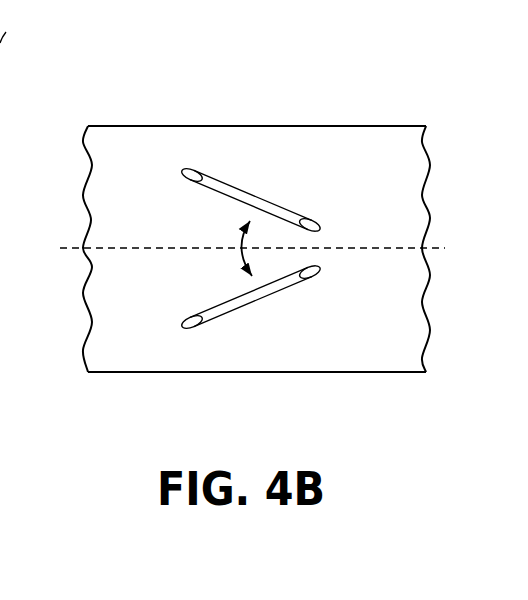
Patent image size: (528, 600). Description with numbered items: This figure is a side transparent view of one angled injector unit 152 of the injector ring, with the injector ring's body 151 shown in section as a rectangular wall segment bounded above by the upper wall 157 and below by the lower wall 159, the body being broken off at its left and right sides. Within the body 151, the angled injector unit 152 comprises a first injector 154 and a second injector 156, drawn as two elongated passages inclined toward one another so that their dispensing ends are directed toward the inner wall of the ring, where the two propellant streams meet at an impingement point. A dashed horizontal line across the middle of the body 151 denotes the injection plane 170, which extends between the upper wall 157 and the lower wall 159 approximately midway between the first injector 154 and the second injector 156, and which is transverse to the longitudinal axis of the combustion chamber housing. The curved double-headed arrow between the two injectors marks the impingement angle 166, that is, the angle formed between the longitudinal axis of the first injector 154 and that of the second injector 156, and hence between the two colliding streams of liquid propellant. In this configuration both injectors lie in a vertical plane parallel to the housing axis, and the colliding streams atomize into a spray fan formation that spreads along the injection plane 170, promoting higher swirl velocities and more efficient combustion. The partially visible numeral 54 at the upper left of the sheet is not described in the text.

The component 54 is at (15, 23).
The body 151 is at (254, 204).
The angled injector unit 152 is at (448, 145).
The first injector 154 is at (238, 195).
The second injector 156 is at (239, 300).
The upper wall 157 is at (157, 126).
The lower wall 159 is at (115, 372).
The impingement angle 166 is at (243, 240).
The injection plane 170 is at (77, 249).